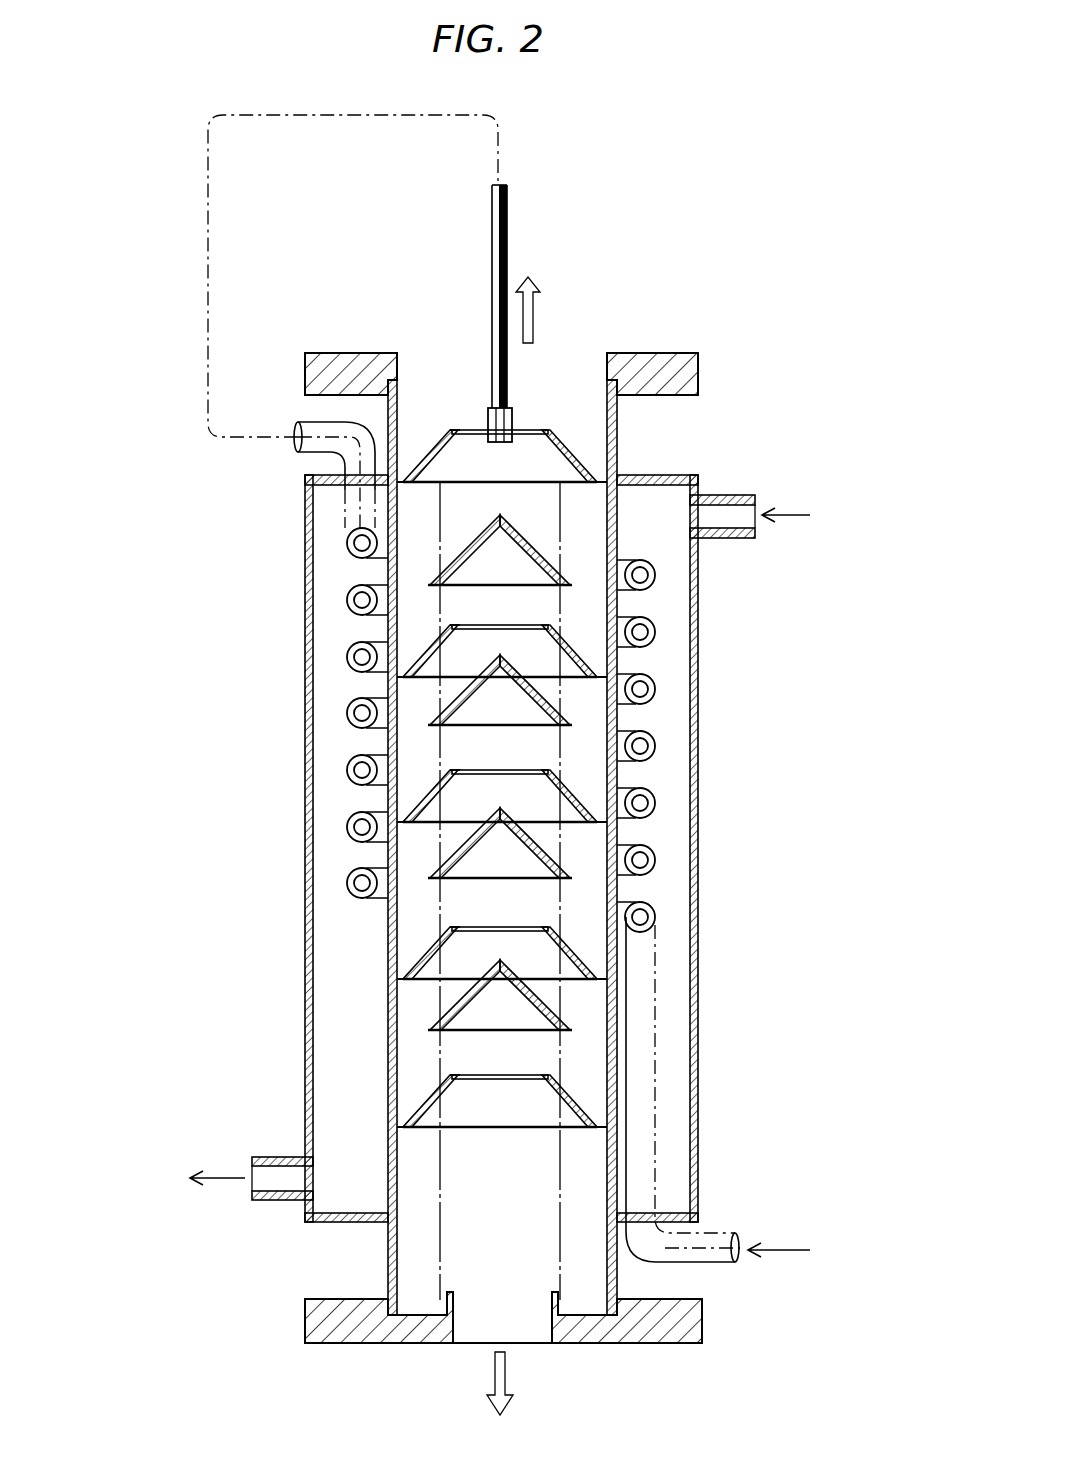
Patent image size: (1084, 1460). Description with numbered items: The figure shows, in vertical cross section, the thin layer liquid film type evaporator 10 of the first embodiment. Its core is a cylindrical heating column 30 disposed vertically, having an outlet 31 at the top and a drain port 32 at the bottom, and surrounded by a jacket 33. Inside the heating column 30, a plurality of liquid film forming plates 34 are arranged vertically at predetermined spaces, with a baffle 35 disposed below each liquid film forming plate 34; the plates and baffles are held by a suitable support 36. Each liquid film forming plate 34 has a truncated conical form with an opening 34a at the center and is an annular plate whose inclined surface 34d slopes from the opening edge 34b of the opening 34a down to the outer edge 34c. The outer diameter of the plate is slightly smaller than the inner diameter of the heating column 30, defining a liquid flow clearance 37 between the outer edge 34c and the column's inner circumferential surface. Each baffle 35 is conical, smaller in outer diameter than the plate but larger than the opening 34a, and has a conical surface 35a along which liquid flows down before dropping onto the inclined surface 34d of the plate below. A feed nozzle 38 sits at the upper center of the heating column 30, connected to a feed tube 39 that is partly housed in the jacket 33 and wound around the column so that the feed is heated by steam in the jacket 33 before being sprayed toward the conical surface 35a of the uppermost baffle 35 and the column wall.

The evaporator 10 is at (651, 253).
The heating column 30 is at (387, 965).
The outlet 31 is at (570, 365).
The drain port 32 is at (527, 1333).
The jacket 33 is at (700, 913).
The liquid film forming plate 34 is at (504, 748).
The opening 34a is at (505, 758).
The opening edge 34b is at (448, 428).
The outer edge 34c is at (387, 487).
The inclined surface 34d is at (423, 788).
The baffle 35 is at (508, 760).
The conical surface 35a is at (470, 545).
The support 36 is at (440, 1255).
The liquid flow clearance 37 is at (600, 479).
The feed nozzle 38 is at (489, 414).
The feed tube 39 is at (507, 232).